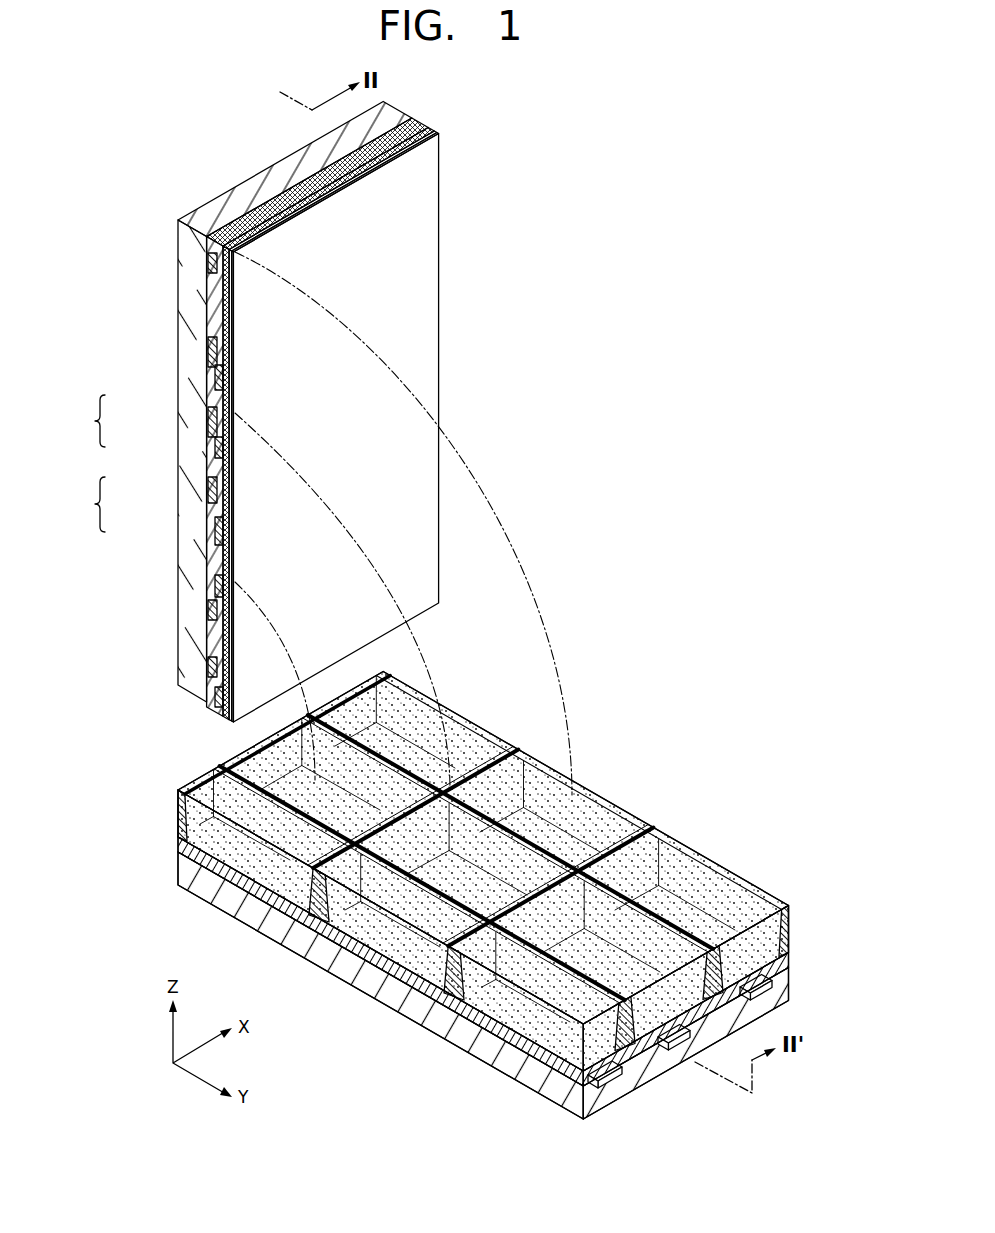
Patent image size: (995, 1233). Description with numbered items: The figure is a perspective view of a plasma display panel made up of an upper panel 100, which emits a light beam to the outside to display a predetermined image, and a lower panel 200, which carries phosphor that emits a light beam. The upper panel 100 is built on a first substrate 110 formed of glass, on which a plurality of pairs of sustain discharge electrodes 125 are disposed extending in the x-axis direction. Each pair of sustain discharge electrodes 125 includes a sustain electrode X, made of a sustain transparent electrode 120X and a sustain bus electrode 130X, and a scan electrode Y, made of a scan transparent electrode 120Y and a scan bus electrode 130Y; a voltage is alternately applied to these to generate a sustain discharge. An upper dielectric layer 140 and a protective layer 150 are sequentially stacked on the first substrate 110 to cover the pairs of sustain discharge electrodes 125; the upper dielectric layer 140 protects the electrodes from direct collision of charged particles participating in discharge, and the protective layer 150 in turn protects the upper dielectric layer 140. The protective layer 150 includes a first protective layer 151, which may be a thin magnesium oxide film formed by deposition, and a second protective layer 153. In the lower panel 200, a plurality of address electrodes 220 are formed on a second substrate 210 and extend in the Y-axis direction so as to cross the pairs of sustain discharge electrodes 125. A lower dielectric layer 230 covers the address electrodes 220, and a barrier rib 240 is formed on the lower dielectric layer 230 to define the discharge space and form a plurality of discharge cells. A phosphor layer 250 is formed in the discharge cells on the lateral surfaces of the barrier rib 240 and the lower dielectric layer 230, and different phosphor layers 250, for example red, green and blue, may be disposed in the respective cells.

The upper panel 100 is at (452, 262).
The first substrate 110 is at (187, 313).
The pairs of sustain discharge electrodes 125 is at (75, 395).
The sustain transparent electrode 120X is at (212, 503).
The sustain bus electrode 130X is at (216, 542).
The scan transparent electrode 120Y is at (214, 444).
The scan bus electrode 130Y is at (216, 420).
The upper dielectric layer 140 is at (217, 640).
The protective layer 150 is at (121, 657).
The first protective layer 151 is at (223, 673).
The second protective layer 153 is at (228, 697).
The lower panel 200 is at (719, 838).
The second substrate 210 is at (782, 987).
The address electrodes 220 is at (783, 1002).
The lower dielectric layer 230 is at (789, 962).
The barrier rib 240 is at (789, 930).
The phosphor layer 250 is at (523, 1015).